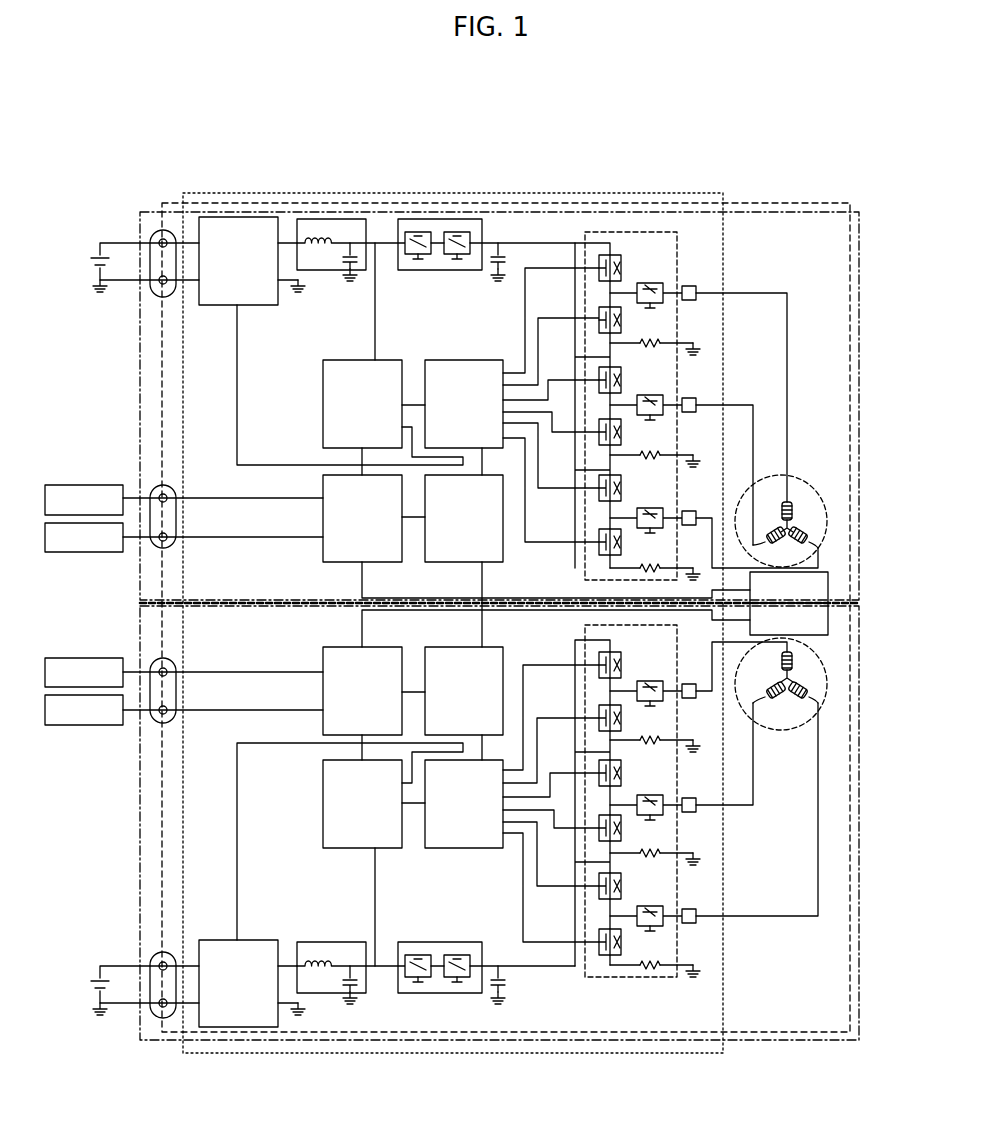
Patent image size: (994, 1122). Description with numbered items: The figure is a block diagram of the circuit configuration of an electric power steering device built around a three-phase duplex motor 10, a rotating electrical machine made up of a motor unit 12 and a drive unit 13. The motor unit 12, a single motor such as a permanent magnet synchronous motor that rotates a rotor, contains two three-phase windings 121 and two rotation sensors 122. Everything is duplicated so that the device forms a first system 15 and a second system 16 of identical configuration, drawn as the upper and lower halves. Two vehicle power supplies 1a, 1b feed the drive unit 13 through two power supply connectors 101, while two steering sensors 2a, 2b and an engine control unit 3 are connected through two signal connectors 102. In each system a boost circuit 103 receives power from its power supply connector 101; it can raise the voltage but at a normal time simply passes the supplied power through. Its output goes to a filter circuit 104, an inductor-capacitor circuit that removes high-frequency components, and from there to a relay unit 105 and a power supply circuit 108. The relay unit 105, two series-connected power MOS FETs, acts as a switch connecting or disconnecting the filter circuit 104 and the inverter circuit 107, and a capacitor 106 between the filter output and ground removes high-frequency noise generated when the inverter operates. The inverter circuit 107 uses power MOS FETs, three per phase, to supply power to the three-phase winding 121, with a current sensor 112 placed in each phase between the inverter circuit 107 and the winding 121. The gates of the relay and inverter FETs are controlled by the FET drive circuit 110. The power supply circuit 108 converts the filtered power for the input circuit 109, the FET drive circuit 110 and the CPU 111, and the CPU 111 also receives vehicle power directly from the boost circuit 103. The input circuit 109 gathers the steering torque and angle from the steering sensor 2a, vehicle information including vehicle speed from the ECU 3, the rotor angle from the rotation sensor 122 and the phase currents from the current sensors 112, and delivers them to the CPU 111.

The vehicle power supply 1a is at (98, 275).
The vehicle power supply 1b is at (98, 998).
The steering sensor 2a is at (105, 485).
The steering sensor 2b is at (105, 725).
The engine control unit (ECU) 3 is at (100, 552).
The three-phase duplex motor 10 is at (852, 205).
The motor unit 12 is at (828, 486).
The drive unit 13 is at (723, 194).
The first system 15 is at (140, 381).
The second system 16 is at (140, 858).
The power supply connector 101 is at (151, 231).
The signal connector 102 is at (176, 487).
The boost circuit 103 is at (250, 216).
The filter circuit 104 is at (348, 218).
The relay unit 105 is at (490, 218).
The capacitor 106 is at (492, 268).
The inverter circuit 107 is at (679, 240).
The power supply circuit 108 is at (388, 360).
The input circuit 109 is at (342, 562).
The FET drive circuit 110 is at (462, 360).
The CPU 111 is at (505, 556).
The current sensor 112 is at (697, 302).
The three-phase winding 121 is at (815, 527).
The rotation sensor 122 is at (830, 578).